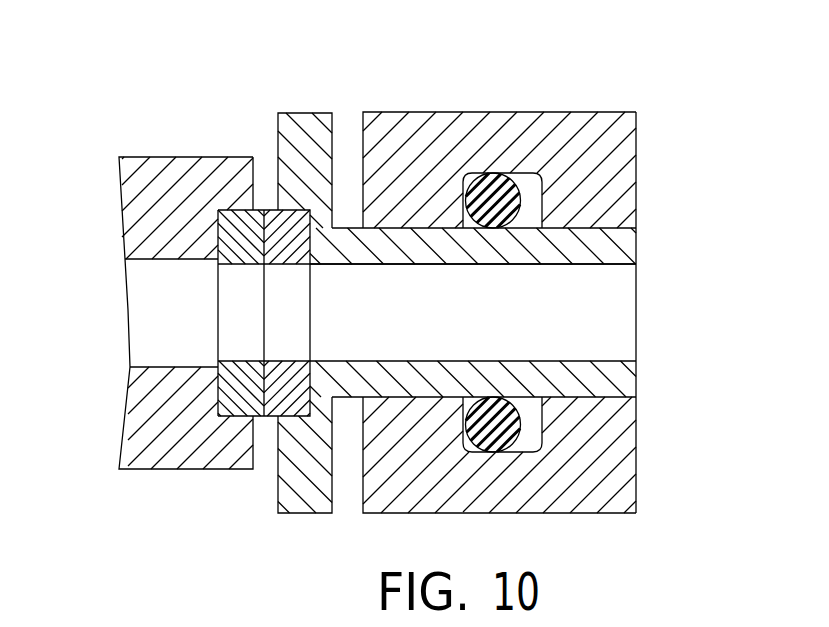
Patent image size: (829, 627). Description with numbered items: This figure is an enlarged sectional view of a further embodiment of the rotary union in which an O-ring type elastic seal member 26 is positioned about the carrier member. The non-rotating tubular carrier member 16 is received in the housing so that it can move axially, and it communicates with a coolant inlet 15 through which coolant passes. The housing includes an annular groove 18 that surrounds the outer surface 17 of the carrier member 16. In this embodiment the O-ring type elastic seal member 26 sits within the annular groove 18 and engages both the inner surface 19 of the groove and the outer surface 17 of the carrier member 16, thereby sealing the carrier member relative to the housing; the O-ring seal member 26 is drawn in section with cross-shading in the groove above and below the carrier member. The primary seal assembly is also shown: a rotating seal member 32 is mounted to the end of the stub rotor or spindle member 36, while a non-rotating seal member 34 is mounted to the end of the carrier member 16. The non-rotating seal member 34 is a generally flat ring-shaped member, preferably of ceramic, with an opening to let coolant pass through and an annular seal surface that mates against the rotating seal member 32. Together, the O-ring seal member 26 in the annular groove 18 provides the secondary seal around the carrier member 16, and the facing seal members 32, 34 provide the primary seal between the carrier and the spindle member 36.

The coolant inlet 15 is at (636, 282).
The tubular carrier member 16 is at (614, 375).
The outer surface 17 is at (563, 226).
The annular groove 18 is at (524, 182).
The inner surface 19 is at (468, 175).
The O-ring seal 26 is at (493, 180).
The rotating seal member 32 is at (240, 238).
The non-rotating seal member 34 is at (282, 393).
The spindle member 36 is at (168, 447).